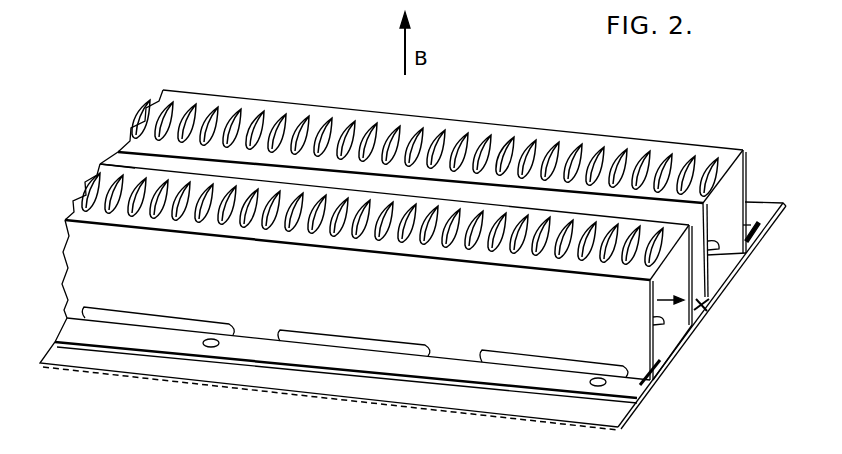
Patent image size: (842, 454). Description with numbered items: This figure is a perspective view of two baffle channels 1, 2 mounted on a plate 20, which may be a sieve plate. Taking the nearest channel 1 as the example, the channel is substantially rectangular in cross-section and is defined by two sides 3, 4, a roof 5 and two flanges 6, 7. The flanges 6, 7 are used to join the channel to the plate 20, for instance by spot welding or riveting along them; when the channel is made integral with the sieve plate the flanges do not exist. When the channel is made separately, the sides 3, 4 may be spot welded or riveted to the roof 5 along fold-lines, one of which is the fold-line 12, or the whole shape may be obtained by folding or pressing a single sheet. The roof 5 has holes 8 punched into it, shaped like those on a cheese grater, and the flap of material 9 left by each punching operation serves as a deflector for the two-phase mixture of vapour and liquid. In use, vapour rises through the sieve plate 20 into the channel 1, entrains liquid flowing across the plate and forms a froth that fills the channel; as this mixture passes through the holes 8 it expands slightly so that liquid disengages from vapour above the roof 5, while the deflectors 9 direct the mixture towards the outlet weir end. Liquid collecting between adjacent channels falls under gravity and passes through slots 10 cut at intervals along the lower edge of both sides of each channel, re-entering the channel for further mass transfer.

The channel 1 is at (287, 303).
The channel 2 is at (612, 130).
The side 3 is at (357, 327).
The side 4 is at (695, 280).
The roof 5 is at (102, 172).
The flange 6 is at (520, 375).
The flange 7 is at (693, 305).
The holes 8 is at (240, 124).
The flap of material 9 is at (343, 128).
The slots 10 is at (163, 318).
The fold-line 12 is at (124, 146).
The plate 20 is at (763, 212).